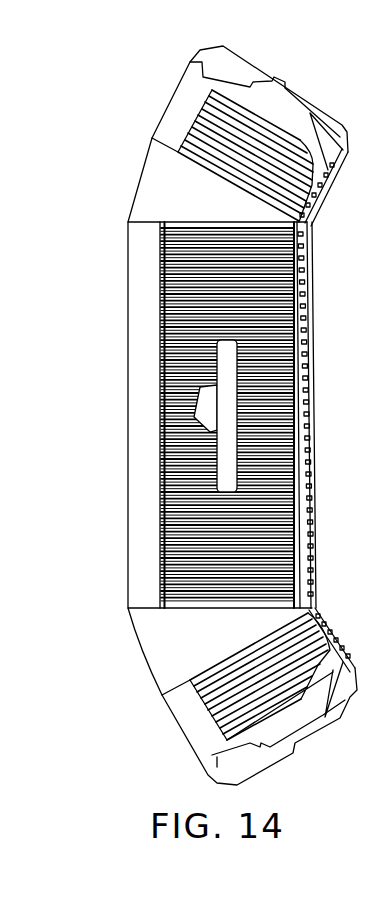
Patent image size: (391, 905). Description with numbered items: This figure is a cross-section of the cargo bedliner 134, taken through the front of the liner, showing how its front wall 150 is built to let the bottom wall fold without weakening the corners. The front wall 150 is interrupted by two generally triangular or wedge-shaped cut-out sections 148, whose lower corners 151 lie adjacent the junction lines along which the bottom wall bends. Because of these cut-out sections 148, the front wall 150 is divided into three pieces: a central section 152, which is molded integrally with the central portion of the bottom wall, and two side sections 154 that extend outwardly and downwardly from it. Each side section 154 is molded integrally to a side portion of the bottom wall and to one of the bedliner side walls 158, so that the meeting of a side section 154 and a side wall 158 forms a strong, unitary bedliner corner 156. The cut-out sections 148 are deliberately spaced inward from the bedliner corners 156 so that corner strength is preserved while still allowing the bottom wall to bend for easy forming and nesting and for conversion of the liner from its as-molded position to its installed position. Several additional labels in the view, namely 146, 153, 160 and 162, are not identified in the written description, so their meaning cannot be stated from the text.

The cargo bedliner 134 is at (266, 52).
The cut-out sections 148 is at (147, 180).
The front wall 150 is at (275, 415).
The lower corners 151 is at (308, 226).
The central section 152 is at (143, 528).
The side sections 154 is at (178, 110).
The side walls 158 is at (290, 95).
The bedliner corners 156 is at (384, 142).
The upper edge 146 is at (381, 189).
The lower rail 153 is at (313, 607).
The edge 160 is at (388, 465).
The edge 162 is at (388, 640).